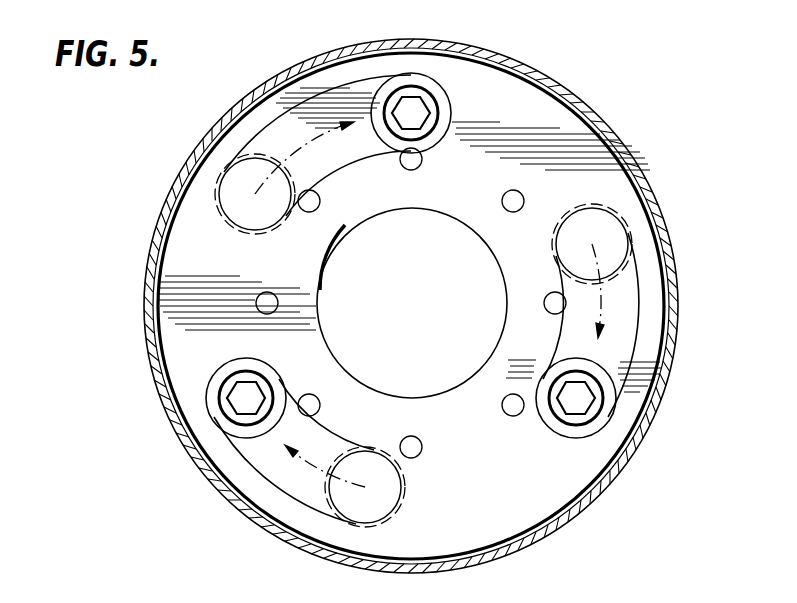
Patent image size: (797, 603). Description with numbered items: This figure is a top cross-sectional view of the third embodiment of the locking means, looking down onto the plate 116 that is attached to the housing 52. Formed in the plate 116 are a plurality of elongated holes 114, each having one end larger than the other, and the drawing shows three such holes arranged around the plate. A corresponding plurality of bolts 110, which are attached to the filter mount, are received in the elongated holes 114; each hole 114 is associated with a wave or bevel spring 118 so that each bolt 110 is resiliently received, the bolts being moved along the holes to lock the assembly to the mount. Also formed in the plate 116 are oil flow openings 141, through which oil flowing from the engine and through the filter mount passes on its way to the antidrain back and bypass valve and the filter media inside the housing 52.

The housing 52 is at (642, 183).
The bolts 110 is at (392, 100).
The elongated holes 114 is at (334, 150).
The plate 116 is at (538, 118).
The wave or bevel spring 118 is at (449, 110).
The oil flow openings 141 is at (271, 293).